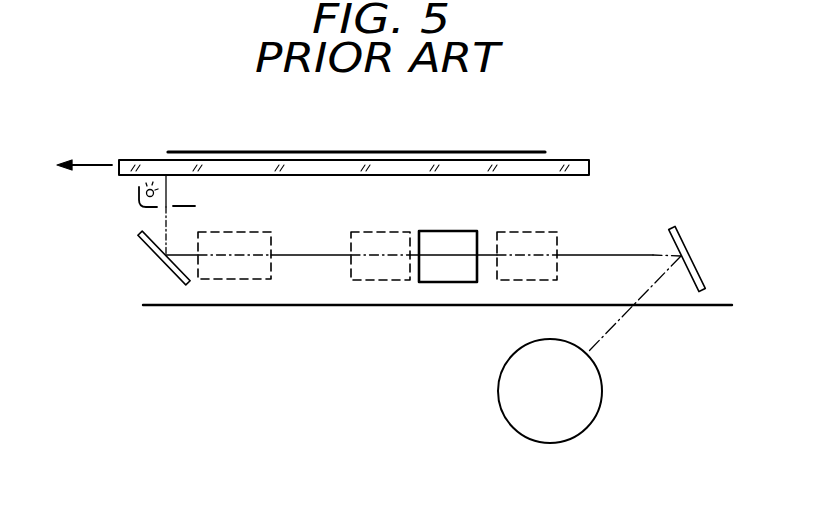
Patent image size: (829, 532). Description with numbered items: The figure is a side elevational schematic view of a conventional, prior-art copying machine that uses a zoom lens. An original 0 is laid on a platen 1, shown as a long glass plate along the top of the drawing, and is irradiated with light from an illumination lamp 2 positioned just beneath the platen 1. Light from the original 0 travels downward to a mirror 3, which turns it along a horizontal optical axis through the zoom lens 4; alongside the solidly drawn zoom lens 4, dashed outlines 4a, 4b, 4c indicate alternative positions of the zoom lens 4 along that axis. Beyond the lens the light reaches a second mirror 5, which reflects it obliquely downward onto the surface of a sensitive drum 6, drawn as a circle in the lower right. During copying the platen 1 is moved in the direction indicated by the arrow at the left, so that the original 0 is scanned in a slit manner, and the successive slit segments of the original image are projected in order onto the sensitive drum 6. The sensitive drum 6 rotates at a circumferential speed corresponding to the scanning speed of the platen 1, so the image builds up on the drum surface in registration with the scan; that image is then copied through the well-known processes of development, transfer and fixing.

The original 0 is at (520, 152).
The platen 1 is at (590, 168).
The illumination lamp 2 is at (138, 195).
The mirror 3 is at (160, 255).
The zoom lens 4 is at (448, 283).
The zoom lens position 4a is at (387, 283).
The zoom lens position 4b is at (519, 283).
The zoom lens position 4c is at (238, 283).
The mirror 5 is at (702, 272).
The sensitive drum 6 is at (602, 392).